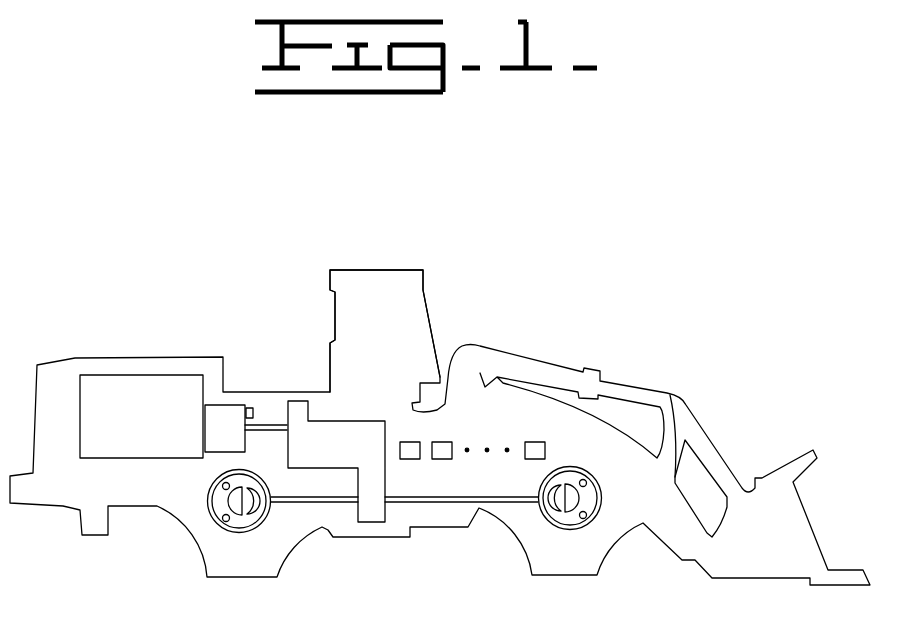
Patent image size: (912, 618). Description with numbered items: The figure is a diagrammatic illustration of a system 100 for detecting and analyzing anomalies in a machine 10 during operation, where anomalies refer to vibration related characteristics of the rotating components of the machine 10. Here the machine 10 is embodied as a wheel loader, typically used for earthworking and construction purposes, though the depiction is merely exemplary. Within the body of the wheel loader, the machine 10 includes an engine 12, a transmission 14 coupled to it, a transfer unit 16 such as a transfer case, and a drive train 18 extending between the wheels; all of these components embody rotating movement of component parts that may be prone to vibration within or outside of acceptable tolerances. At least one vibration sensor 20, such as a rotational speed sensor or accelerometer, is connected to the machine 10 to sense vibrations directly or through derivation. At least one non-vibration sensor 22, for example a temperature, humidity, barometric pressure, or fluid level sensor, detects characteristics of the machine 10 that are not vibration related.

The system 100 is at (165, 224).
The machine 10 is at (270, 317).
The engine 12 is at (154, 428).
The transmission 14 is at (236, 446).
The transfer unit 16 is at (346, 461).
The drive train 18 is at (393, 505).
The vibration sensor 20 is at (250, 407).
The non-vibration sensor 22 is at (446, 472).